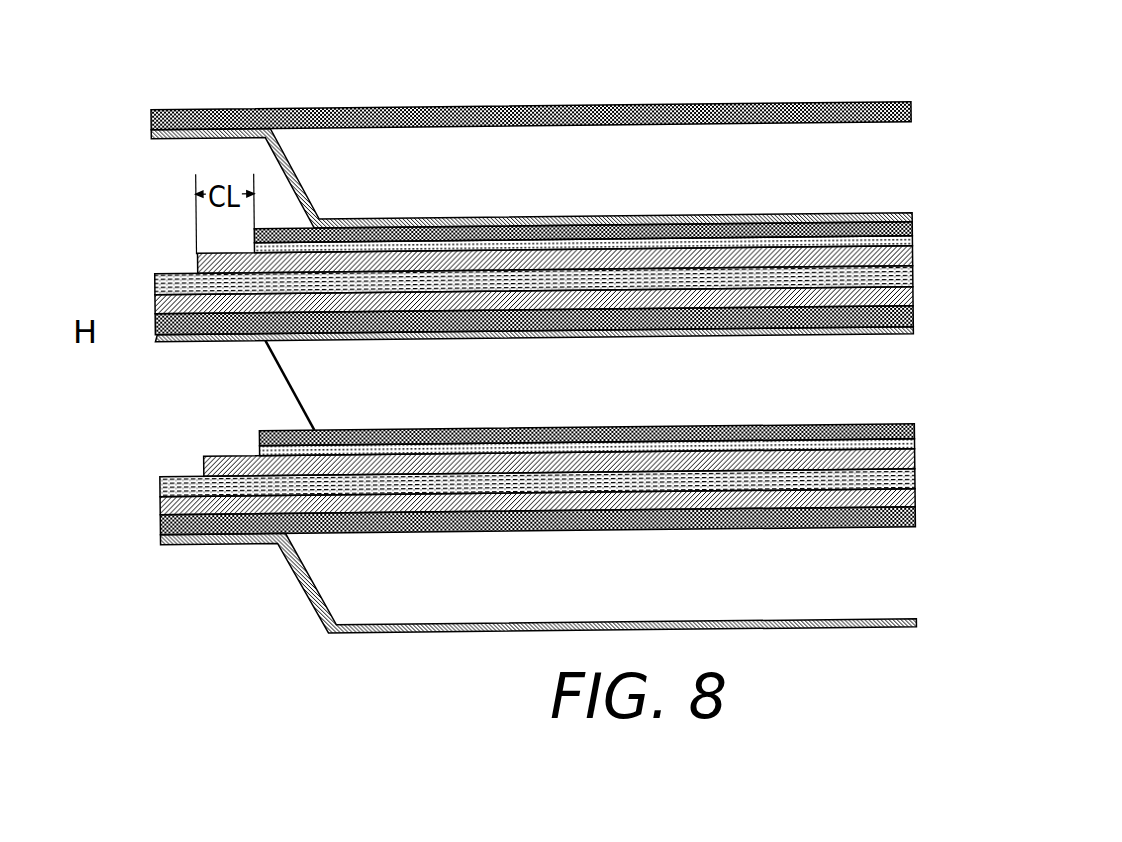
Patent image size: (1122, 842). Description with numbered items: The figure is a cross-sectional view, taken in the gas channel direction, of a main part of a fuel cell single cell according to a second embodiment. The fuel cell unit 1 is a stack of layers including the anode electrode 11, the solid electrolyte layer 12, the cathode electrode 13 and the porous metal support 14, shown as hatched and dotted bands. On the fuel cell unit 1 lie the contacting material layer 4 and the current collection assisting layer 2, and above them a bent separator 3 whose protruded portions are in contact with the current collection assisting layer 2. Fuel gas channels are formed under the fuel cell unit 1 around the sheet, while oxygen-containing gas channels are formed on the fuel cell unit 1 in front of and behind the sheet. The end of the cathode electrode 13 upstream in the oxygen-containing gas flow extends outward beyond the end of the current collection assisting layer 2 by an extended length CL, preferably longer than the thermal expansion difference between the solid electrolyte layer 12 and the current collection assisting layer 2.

The fuel cell unit 1 is at (635, 531).
The anode electrode 11 is at (913, 497).
The solid electrolyte layer 12 is at (913, 475).
The cathode electrode 13 is at (913, 458).
The porous metal support 14 is at (591, 571).
The current collection assisting layer 2 is at (913, 226).
The separator 3 is at (906, 219).
The contacting material layer 4 is at (913, 240).